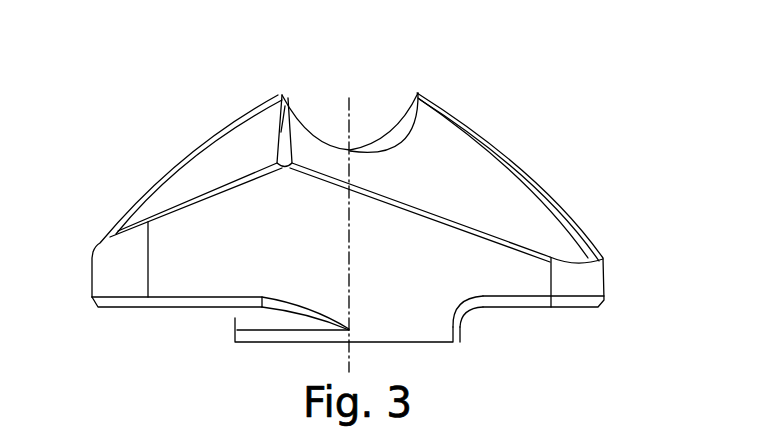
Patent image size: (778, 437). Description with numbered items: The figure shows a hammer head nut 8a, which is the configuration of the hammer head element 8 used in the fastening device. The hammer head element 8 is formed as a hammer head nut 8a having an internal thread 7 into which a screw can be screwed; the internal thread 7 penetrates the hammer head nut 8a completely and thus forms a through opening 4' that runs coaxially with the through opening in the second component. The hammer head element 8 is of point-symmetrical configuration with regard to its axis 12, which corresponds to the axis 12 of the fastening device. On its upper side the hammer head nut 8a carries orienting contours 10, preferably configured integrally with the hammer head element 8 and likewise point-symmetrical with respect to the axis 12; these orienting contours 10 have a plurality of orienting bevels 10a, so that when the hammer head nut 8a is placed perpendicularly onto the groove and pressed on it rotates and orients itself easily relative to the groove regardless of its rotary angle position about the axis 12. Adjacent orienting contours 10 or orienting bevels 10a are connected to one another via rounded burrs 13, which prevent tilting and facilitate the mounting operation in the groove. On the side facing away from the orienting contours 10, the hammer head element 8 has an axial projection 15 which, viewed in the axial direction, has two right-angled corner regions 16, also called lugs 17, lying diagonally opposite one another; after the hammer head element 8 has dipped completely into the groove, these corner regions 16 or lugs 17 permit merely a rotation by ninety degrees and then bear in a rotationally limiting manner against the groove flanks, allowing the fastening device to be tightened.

The through opening 4' is at (320, 208).
The internal thread 7 is at (403, 122).
The hammer head element 8 is at (371, 187).
The hammer head nut 8a is at (567, 103).
The orienting contours 10 is at (316, 152).
The orienting bevels 10a is at (200, 180).
The axis 12 is at (350, 263).
The rounded burrs 13 is at (235, 123).
The axial projection 15 is at (247, 316).
The corner regions 16 is at (348, 366).
The lugs 17 is at (236, 318).